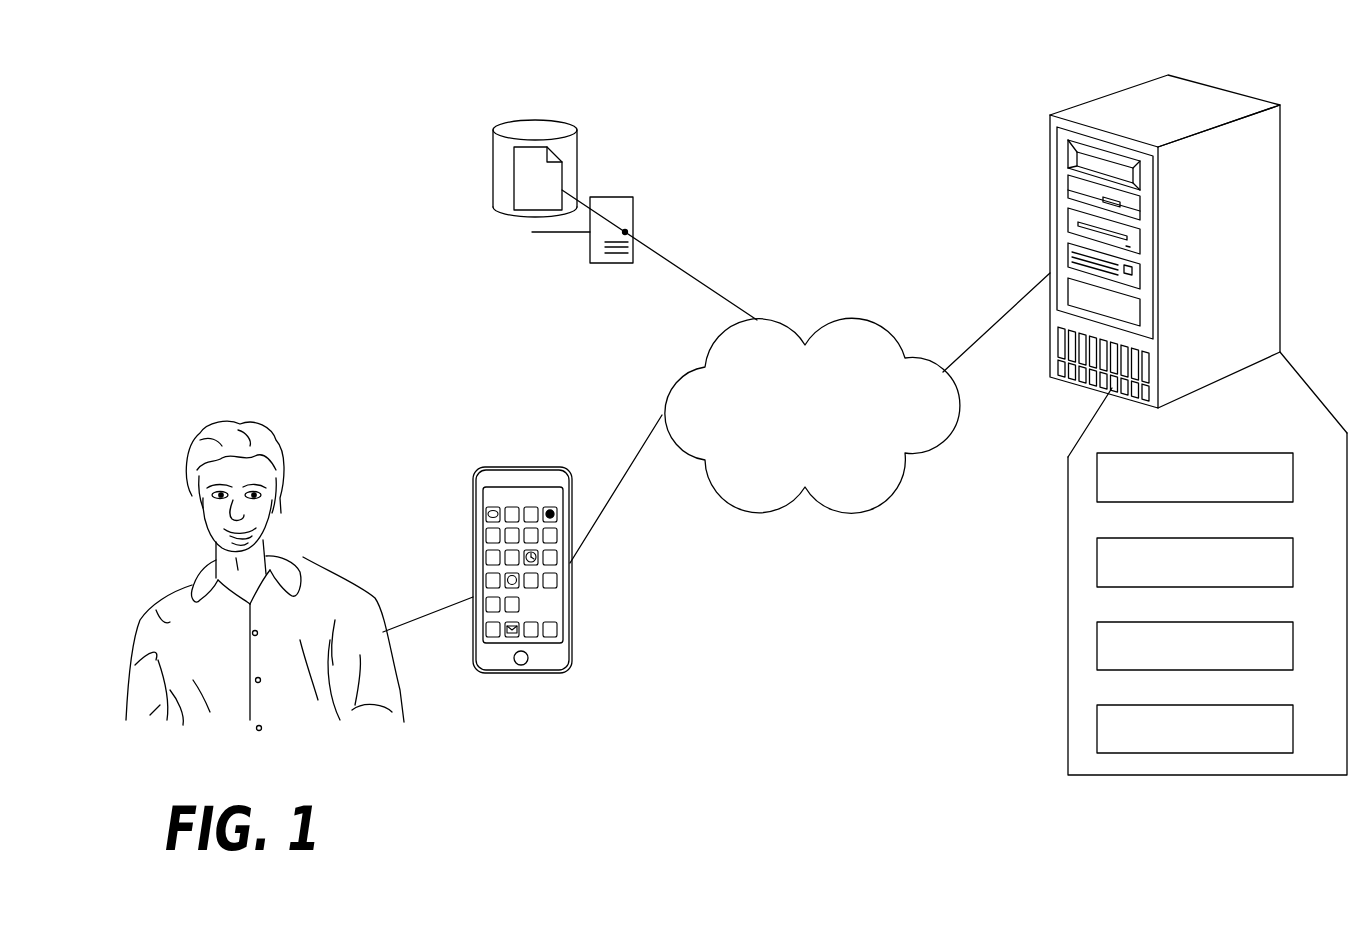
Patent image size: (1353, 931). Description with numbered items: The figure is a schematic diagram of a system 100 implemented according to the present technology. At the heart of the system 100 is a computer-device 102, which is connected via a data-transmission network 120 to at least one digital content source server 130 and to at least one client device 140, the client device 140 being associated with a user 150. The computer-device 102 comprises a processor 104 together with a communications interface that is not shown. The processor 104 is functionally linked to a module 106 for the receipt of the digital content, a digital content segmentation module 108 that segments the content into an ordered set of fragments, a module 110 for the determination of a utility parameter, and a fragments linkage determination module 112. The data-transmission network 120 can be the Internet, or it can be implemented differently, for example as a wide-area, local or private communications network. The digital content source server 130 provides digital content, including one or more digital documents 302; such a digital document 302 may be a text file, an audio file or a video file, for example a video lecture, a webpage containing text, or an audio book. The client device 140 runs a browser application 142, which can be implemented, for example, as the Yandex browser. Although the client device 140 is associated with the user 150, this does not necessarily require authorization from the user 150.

The system 100 is at (251, 108).
The computer-device 102 is at (1108, 96).
The processor 104 is at (1219, 256).
The module for the receipt of the digital content 106 is at (1195, 477).
The digital content segmentation module 108 is at (1195, 562).
The module for the determination of a utility parameter 110 is at (1195, 646).
The fragments linkage determination module 112 is at (1195, 729).
The data-transmission network 120 is at (848, 318).
The digital content source server 130 is at (493, 140).
The digital document 302 is at (538, 178).
The client device 140 is at (509, 673).
The browser application 142 is at (549, 510).
The user 150 is at (333, 556).